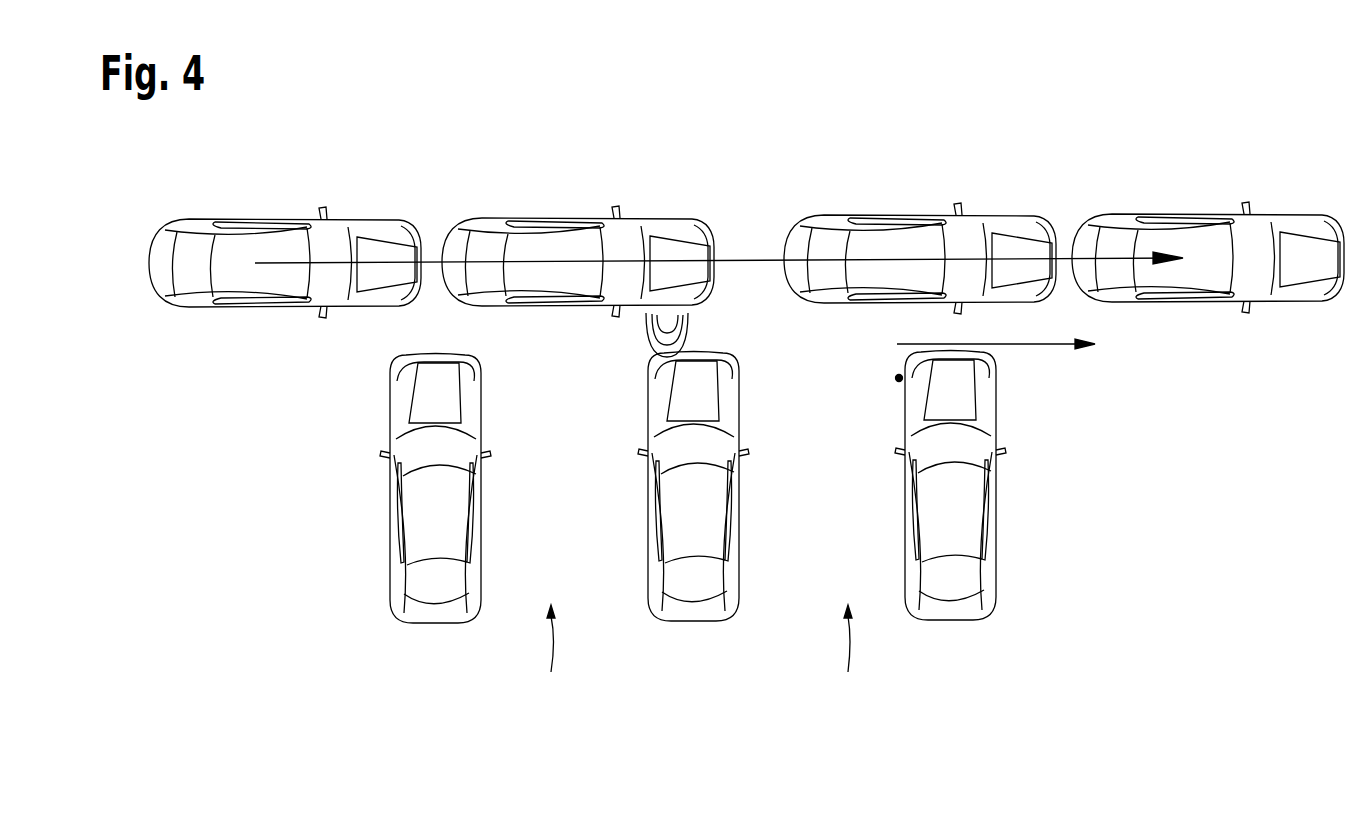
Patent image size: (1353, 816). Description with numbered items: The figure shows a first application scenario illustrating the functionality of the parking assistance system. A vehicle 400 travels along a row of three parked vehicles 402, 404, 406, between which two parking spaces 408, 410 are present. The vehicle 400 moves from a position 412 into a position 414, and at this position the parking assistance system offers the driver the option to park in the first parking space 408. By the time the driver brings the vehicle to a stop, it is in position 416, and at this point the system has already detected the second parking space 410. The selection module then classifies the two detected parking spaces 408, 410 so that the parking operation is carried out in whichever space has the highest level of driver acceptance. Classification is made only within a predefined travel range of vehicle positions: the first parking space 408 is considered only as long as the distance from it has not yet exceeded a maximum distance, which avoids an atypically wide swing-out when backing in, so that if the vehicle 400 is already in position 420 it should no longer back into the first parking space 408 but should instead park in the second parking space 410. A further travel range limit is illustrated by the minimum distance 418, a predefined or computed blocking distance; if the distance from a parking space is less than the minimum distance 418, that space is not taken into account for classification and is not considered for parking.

The vehicle 400 is at (285, 268).
The vehicle 402 is at (433, 613).
The vehicle 404 is at (698, 612).
The vehicle 406 is at (956, 612).
The first parking space 408 is at (548, 656).
The second parking space 410 is at (847, 656).
The position 412 is at (388, 232).
The position 414 is at (680, 232).
The position 416 is at (1023, 230).
The minimum distance 418 is at (1050, 350).
The position 420 is at (1313, 230).